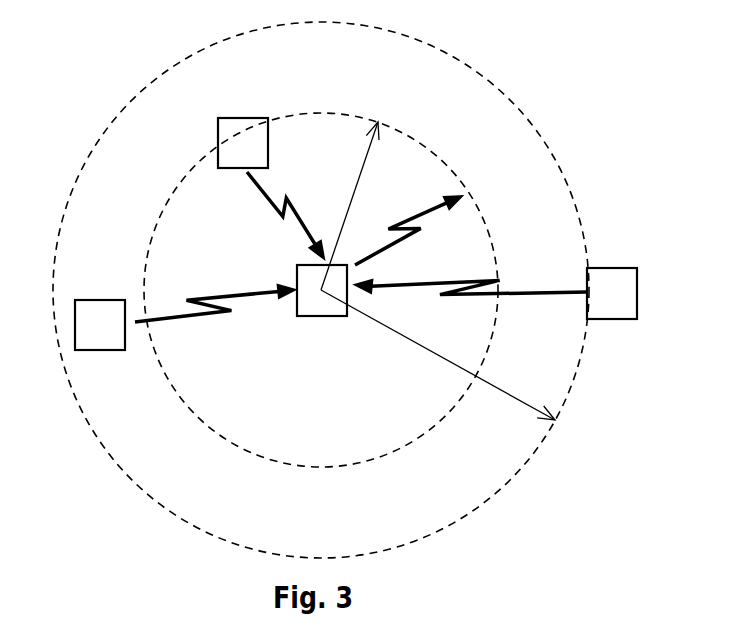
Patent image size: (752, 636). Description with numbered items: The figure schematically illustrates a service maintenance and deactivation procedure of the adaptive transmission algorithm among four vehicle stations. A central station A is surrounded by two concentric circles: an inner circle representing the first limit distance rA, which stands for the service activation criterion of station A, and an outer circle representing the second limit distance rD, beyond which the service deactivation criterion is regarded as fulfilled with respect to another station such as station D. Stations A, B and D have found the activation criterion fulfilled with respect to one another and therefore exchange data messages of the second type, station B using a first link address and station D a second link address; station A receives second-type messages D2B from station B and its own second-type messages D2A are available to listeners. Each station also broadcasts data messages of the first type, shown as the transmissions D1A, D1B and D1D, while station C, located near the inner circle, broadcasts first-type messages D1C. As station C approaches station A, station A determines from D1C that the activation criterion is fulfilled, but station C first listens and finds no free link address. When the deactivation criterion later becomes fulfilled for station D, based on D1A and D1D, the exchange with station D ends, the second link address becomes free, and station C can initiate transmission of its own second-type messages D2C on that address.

The station A is at (311, 346).
The station B is at (108, 294).
The station C is at (255, 121).
The station D is at (625, 267).
The first limit distance rA is at (350, 206).
The second limit distance rD is at (548, 422).
The data messages of the first type D1A is at (407, 214).
The data messages of the second type D2A is at (466, 228).
The data messages of the first type D1B is at (214, 293).
The data messages of the second type D2B is at (181, 340).
The data messages of the first type D1C is at (299, 182).
The data messages of the second type D2C is at (267, 214).
The data messages of the first type D1D is at (472, 305).